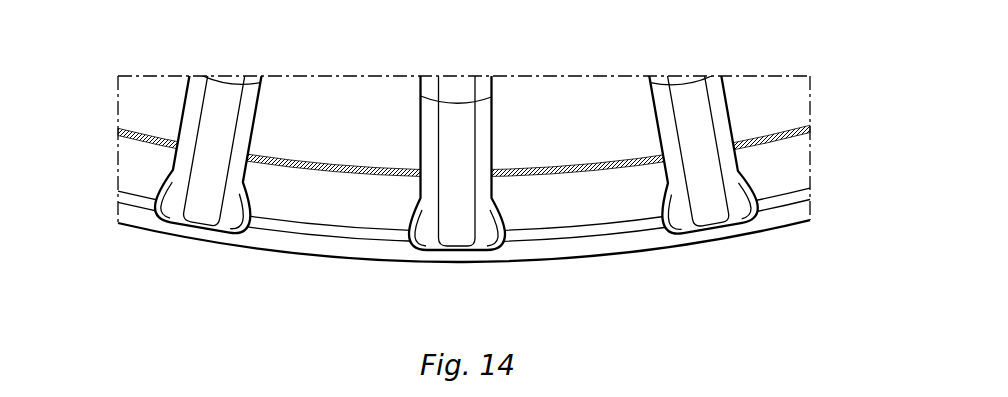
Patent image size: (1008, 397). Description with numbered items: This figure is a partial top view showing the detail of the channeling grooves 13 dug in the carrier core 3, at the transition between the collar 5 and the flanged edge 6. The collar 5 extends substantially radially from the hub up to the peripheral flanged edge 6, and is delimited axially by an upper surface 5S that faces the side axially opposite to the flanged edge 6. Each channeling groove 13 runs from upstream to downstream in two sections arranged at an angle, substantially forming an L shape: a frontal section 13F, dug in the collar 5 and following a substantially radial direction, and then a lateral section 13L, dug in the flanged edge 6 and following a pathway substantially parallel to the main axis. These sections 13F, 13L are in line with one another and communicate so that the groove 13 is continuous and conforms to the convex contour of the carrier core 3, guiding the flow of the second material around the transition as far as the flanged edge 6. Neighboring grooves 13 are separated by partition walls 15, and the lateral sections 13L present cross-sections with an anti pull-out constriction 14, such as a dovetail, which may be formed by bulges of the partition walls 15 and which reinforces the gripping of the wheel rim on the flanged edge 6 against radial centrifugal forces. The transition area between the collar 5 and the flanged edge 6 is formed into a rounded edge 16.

The carrier core 3 is at (770, 88).
The collar 5 is at (622, 95).
The upper surface 5S is at (530, 88).
The flanged edge 6 is at (582, 247).
The channeling grooves 13 is at (568, 105).
The frontal section 13F is at (322, 90).
The lateral section 13L is at (332, 205).
The anti pull-out constriction 14 is at (260, 230).
The partition walls 15 is at (222, 95).
The rounded edge 16 is at (138, 170).